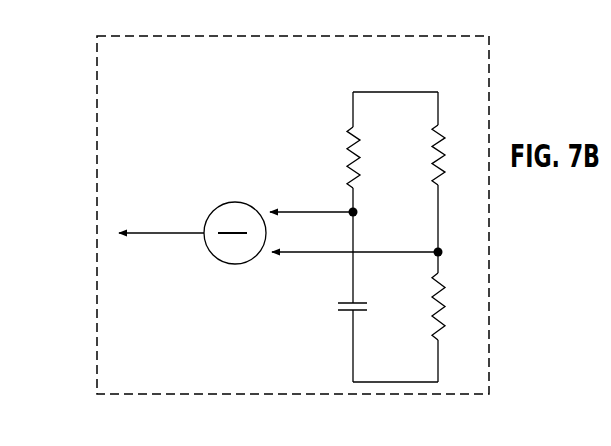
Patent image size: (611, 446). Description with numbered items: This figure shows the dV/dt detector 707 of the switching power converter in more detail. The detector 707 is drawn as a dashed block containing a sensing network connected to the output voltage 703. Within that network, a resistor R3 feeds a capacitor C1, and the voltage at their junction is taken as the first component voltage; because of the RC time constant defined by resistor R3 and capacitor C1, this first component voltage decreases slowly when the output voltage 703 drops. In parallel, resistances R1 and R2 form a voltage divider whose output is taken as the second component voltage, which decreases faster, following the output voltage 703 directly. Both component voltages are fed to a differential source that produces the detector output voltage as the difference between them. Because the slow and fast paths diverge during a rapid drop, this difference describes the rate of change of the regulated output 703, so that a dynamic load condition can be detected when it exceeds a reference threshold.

The output voltage 703 is at (398, 82).
The detector 707 is at (299, 405).
The resistance R1 is at (452, 155).
The resistance R2 is at (452, 306).
The resistor R3 is at (337, 157).
The capacitor C1 is at (341, 321).